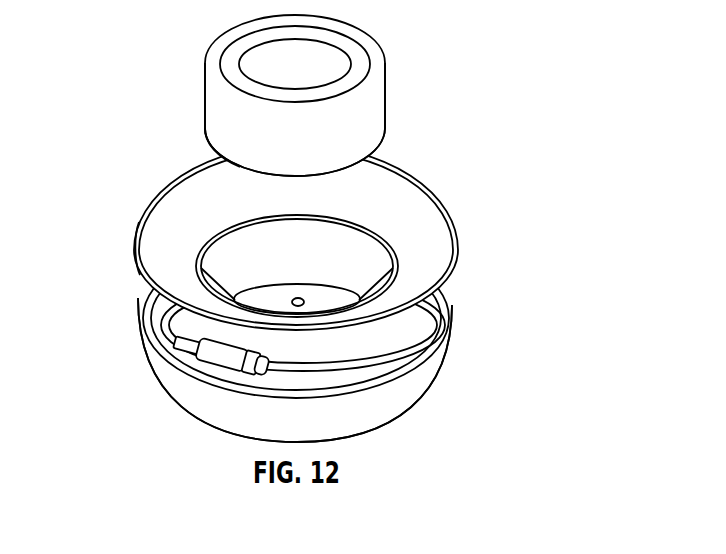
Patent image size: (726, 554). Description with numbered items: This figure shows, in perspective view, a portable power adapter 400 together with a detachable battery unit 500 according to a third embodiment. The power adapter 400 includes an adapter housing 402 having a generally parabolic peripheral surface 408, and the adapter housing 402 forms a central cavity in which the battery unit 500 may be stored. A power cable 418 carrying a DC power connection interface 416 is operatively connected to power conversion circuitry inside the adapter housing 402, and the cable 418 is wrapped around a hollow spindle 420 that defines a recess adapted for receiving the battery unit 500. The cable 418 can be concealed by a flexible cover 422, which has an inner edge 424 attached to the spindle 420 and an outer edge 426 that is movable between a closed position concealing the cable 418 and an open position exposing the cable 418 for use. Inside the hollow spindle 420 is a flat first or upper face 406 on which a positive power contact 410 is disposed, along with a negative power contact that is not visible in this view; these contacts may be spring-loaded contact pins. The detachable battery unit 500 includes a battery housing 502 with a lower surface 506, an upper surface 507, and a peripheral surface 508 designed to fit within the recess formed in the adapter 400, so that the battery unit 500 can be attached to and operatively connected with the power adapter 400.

The power adapter 400 is at (484, 298).
The adapter housing 402 is at (415, 377).
The upper face 406 is at (260, 305).
The peripheral surface 408 is at (317, 433).
The positive power contact 410 is at (300, 298).
The DC power connection interface 416 is at (213, 348).
The power cable 418 is at (382, 350).
The hollow spindle 420 is at (357, 258).
The flexible cover 422 is at (432, 228).
The inner edge 424 is at (318, 215).
The outer edge 426 is at (134, 258).
The detachable battery unit 500 is at (218, 28).
The battery housing 502 is at (385, 97).
The lower surface 506 is at (212, 153).
The upper surface 507 is at (365, 45).
The peripheral surface 508 is at (317, 156).